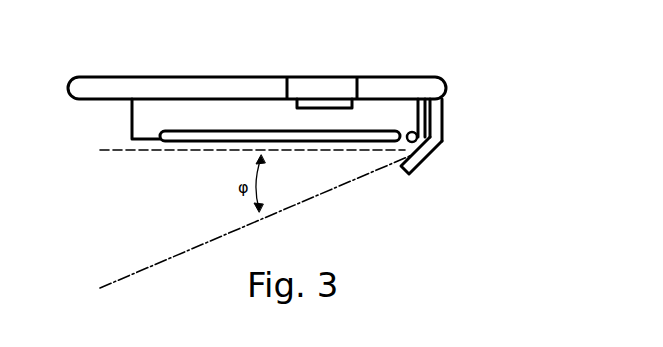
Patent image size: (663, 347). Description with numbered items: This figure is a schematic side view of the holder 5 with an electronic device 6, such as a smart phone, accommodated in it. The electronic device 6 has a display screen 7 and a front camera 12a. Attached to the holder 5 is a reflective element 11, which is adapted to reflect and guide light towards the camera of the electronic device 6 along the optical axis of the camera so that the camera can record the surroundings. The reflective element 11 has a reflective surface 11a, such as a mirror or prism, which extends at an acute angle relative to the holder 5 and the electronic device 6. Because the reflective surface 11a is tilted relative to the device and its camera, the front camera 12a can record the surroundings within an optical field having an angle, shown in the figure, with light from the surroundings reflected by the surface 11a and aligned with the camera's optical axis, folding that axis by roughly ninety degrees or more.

The holder 5 is at (243, 92).
The electronic device 6 is at (152, 120).
The display screen 7 is at (205, 137).
The reflective element 11 is at (435, 145).
The reflective surface 11a is at (423, 160).
The front camera 12a is at (410, 131).